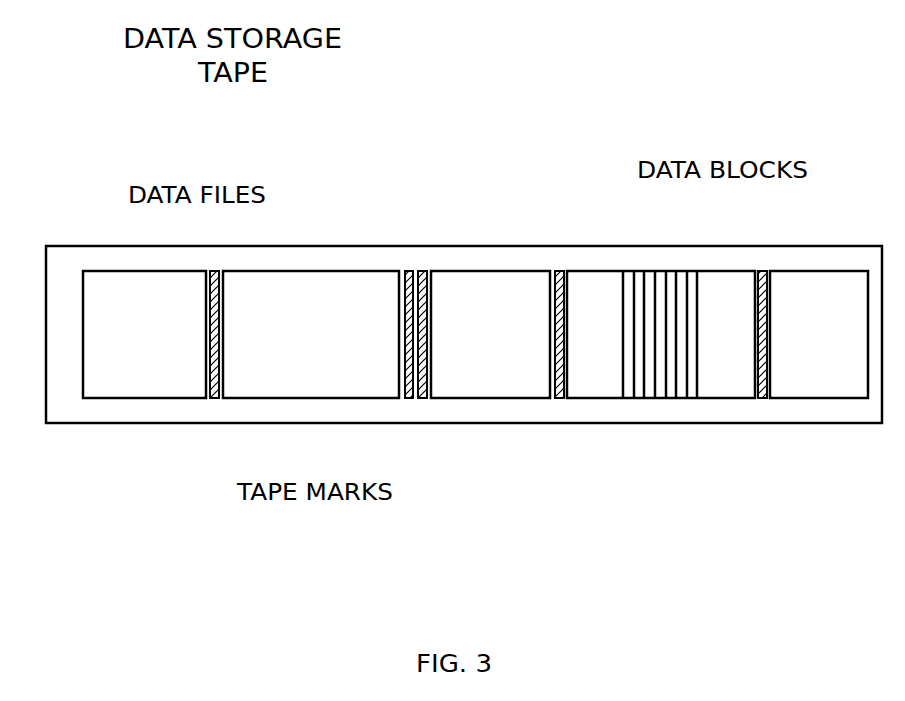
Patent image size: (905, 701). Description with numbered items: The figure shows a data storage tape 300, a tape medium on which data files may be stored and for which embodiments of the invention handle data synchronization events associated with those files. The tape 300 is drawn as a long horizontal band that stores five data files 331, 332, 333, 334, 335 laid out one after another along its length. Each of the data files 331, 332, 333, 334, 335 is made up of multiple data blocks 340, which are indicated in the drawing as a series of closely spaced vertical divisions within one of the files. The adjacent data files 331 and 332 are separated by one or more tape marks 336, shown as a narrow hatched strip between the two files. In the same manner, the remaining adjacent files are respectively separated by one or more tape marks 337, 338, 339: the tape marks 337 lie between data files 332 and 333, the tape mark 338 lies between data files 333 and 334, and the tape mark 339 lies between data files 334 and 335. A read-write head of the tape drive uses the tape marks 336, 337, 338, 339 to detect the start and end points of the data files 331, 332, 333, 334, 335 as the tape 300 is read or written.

The tape 300 is at (370, 106).
The data file 331 is at (161, 285).
The data file 332 is at (318, 285).
The data file 333 is at (458, 285).
The data file 334 is at (590, 285).
The data file 335 is at (832, 285).
The tape mark 336 is at (215, 398).
The tape marks 337 is at (409, 398).
The tape mark 338 is at (559, 398).
The tape mark 339 is at (762, 398).
The data blocks 340 is at (682, 278).